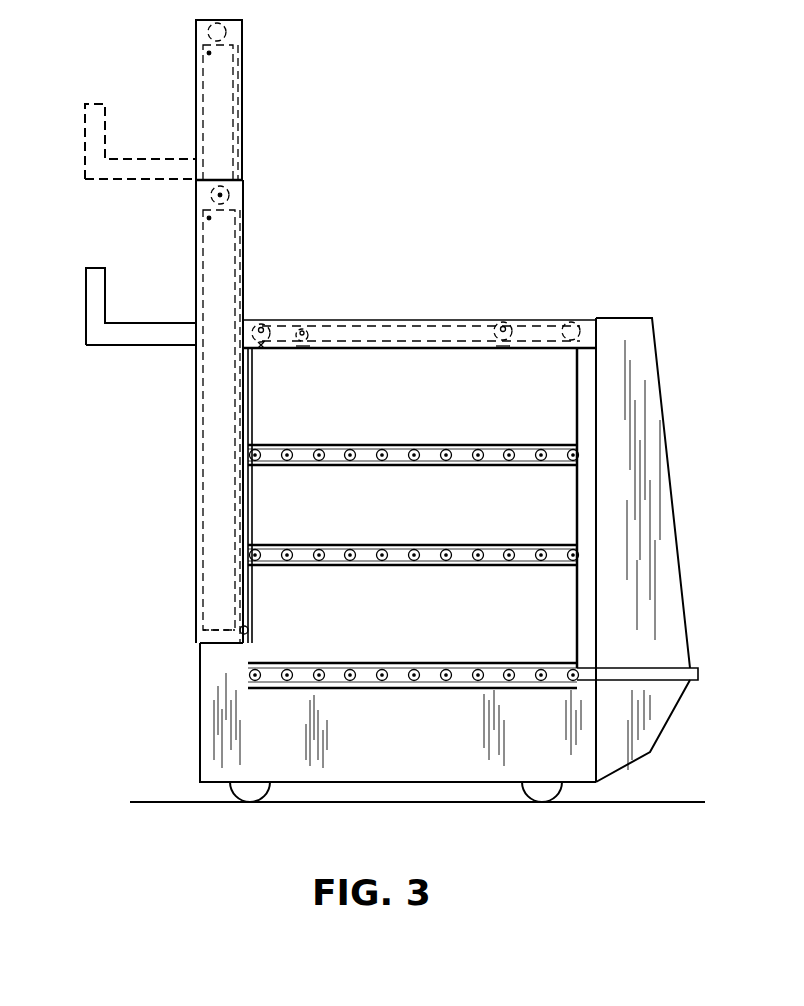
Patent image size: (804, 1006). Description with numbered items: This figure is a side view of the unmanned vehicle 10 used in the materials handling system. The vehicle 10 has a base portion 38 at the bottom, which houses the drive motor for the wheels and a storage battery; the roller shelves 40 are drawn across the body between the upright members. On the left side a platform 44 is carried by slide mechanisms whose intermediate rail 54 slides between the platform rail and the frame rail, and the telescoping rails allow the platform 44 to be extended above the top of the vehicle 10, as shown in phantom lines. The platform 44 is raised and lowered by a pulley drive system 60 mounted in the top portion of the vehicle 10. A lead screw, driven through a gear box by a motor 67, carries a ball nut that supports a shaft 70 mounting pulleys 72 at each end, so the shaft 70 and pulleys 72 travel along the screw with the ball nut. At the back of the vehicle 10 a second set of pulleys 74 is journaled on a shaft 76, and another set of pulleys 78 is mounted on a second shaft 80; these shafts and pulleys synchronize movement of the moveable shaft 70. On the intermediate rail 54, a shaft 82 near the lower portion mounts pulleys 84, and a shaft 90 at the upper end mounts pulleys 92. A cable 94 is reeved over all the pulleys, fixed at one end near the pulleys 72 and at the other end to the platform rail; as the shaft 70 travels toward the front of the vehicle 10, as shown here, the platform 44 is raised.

The vehicle 10 is at (683, 330).
The base portion 38 is at (422, 747).
The roller conveyor shelves 40 is at (379, 445).
The platform 44 is at (84, 149).
The intermediate rail 54 is at (242, 42).
The pulley drive system 60 is at (427, 296).
The motor 67 is at (573, 322).
The shaft 70 is at (504, 322).
The pulleys 72 is at (503, 350).
The second set of pulleys 74 is at (263, 350).
The shaft 76 is at (263, 324).
The pulleys 78 is at (303, 328).
The second shaft 80 is at (306, 350).
The shaft 82 is at (249, 631).
The pulleys 84 is at (240, 628).
The shaft 90 is at (243, 180).
The pulleys 92 is at (230, 200).
The cable 94 is at (335, 322).